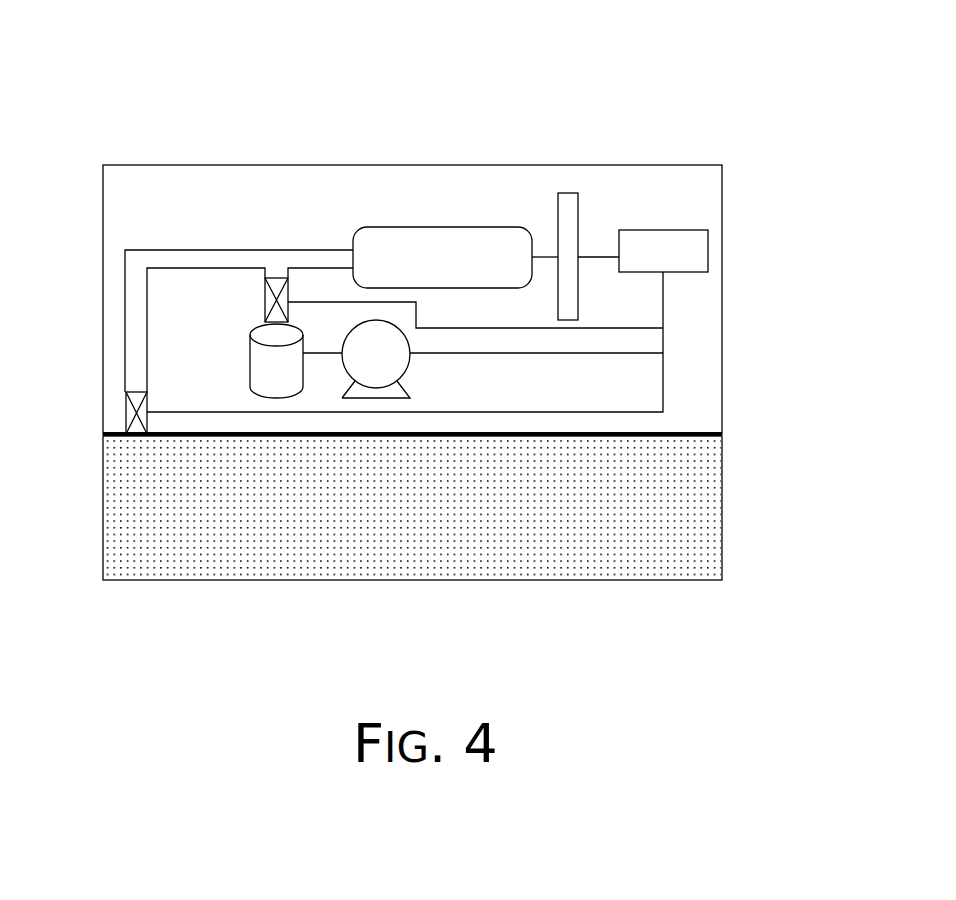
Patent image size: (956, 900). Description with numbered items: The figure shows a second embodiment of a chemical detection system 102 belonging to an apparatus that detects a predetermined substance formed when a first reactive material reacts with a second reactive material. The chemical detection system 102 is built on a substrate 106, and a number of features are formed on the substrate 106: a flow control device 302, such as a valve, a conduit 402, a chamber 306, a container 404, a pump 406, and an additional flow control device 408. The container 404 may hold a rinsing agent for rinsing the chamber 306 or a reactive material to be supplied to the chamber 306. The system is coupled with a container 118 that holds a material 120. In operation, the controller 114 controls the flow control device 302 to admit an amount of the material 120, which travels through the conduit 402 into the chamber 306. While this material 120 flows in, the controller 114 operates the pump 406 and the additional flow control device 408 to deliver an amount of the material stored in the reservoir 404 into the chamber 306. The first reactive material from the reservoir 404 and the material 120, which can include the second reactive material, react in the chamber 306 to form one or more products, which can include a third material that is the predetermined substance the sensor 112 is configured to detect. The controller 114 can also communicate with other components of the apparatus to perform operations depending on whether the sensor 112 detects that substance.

The chemical detection system 102 is at (251, 73).
The substrate 106 is at (722, 300).
The sensor 112 is at (569, 193).
The controller 114 is at (663, 230).
The container 118 is at (722, 508).
The material 120 is at (185, 543).
The flow control device 302 is at (147, 412).
The chamber 306 is at (443, 227).
The conduit 402 is at (223, 250).
The container 404 is at (250, 357).
The pump 406 is at (377, 398).
The additional flow control device 408 is at (289, 290).